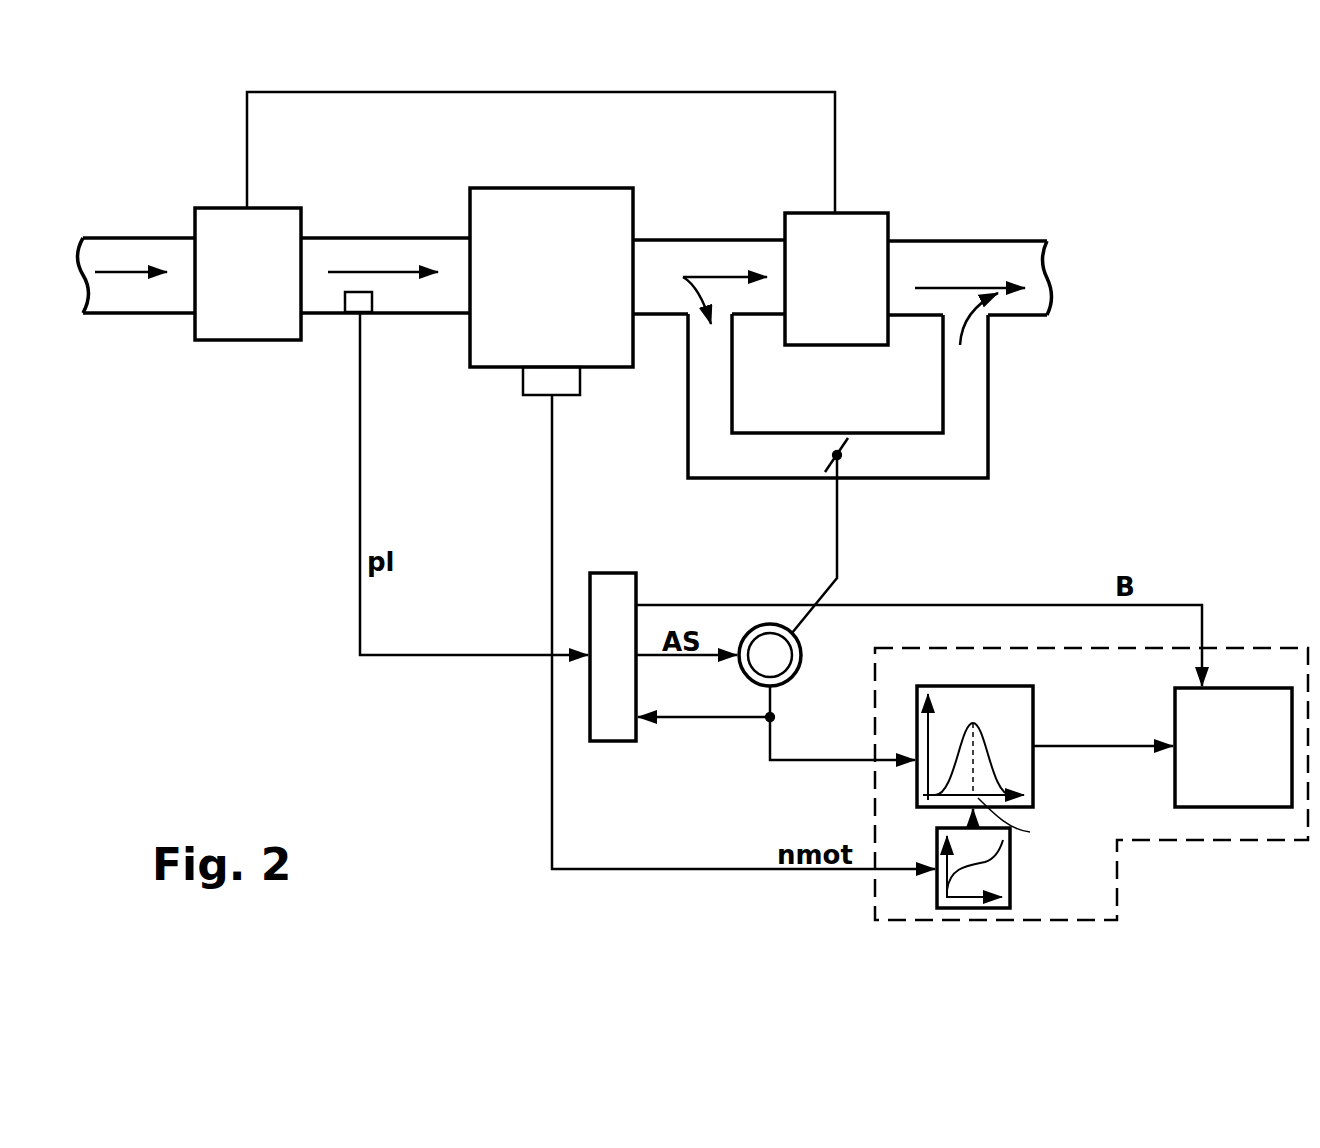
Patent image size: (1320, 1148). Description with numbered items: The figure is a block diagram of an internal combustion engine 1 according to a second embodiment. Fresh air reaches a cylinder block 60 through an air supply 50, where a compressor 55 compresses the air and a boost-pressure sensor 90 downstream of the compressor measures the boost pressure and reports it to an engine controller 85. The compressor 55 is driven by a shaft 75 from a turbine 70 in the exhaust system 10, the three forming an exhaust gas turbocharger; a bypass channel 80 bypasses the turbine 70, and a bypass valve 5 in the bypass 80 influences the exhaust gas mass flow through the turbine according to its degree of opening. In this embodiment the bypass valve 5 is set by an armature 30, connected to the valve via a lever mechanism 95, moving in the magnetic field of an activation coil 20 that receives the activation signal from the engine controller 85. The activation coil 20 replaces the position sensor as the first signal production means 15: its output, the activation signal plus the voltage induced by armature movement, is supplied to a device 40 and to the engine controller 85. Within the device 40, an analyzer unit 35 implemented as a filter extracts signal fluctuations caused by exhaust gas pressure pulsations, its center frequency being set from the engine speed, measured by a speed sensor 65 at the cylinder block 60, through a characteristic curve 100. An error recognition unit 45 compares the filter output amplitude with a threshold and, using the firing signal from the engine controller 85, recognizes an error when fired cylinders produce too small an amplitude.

The internal combustion engine 1 is at (1218, 181).
The bypass valve 5 is at (836, 443).
The exhaust system 10 is at (733, 240).
The first signal production means 15 is at (690, 742).
The activation coil 20 is at (768, 623).
The armature 30 is at (795, 655).
The analyzer unit 35 is at (1033, 720).
The device 40 is at (1237, 660).
The error recognition unit 45 is at (1174, 779).
The air supply 50 is at (137, 235).
The compressor 55 is at (252, 343).
The cylinder block 60 is at (550, 186).
The speed sensor 65 is at (528, 385).
The turbine 70 is at (868, 212).
The shaft 75 is at (633, 95).
The bypass channel 80 is at (960, 468).
The engine controller 85 is at (617, 572).
The boost-pressure sensor 90 is at (360, 303).
The lever mechanism 95 is at (840, 577).
The characteristic curve 100 is at (1012, 868).